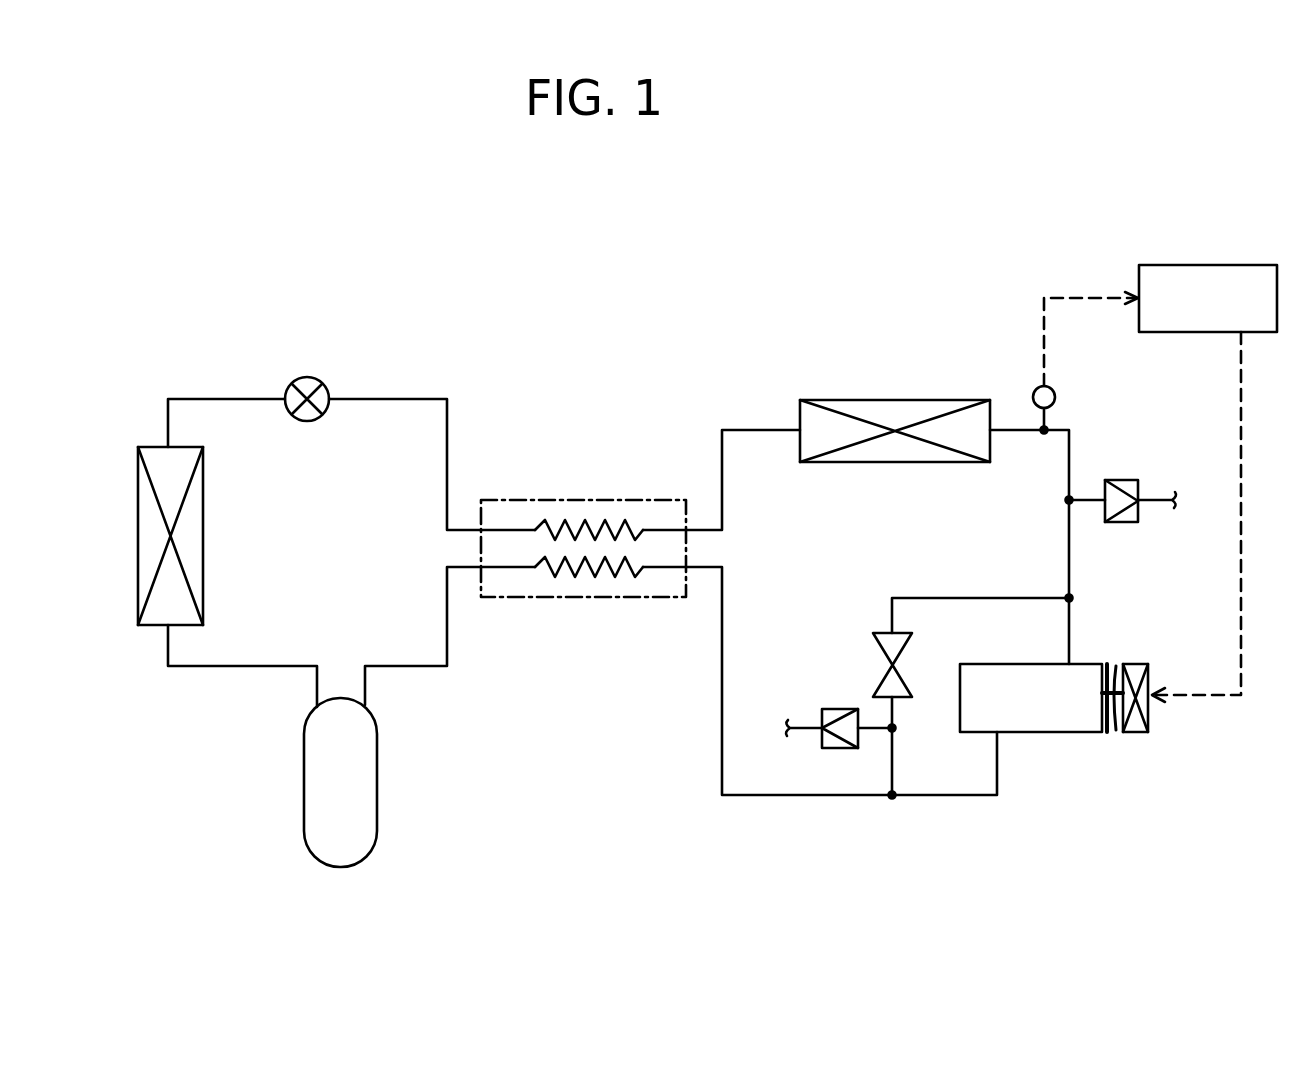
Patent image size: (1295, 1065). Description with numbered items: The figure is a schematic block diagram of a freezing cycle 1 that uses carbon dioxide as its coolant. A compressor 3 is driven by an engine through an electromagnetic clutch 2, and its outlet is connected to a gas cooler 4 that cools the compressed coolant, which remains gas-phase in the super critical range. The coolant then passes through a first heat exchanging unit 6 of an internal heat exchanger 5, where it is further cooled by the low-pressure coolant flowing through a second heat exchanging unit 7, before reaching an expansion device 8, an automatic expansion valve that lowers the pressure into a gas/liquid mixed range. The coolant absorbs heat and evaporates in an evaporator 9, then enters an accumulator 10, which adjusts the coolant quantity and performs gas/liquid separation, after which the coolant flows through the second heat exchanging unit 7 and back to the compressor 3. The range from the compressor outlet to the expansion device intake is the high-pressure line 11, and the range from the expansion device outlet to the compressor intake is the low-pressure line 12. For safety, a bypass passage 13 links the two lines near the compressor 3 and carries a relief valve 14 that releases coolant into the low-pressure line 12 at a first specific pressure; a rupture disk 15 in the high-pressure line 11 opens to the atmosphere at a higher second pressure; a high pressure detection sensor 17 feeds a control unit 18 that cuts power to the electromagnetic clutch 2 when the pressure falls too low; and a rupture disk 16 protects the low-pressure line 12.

The freezing cycle 1 is at (812, 372).
The electromagnetic clutch 2 is at (1138, 672).
The compressor 3 is at (1055, 733).
The radiator (gas cooler) 4 is at (896, 410).
The internal heat exchanger 5 is at (610, 500).
The first heat exchanging unit 6 is at (548, 528).
The second heat exchanging unit 7 is at (555, 572).
The expansion device 8 is at (312, 378).
The evaporator 9 is at (205, 548).
The accumulator 10 is at (368, 856).
The high-pressure line 11 is at (440, 382).
The low-pressure line 12 is at (436, 682).
The bypass passage 13 is at (958, 597).
The relief valve 14 is at (880, 653).
The rupture disk 15 is at (1124, 480).
The rupture disk 16 is at (835, 750).
The high pressure detection sensor 17 is at (1056, 400).
The control unit 18 is at (1172, 334).